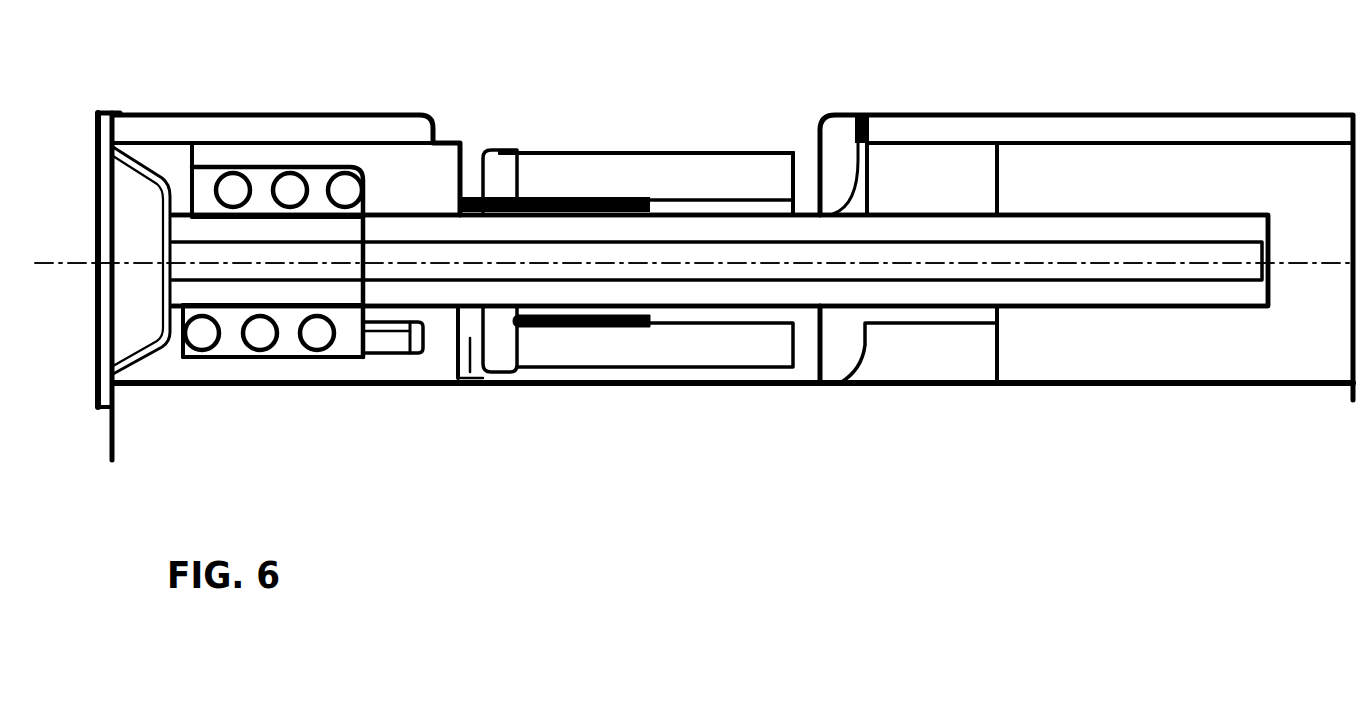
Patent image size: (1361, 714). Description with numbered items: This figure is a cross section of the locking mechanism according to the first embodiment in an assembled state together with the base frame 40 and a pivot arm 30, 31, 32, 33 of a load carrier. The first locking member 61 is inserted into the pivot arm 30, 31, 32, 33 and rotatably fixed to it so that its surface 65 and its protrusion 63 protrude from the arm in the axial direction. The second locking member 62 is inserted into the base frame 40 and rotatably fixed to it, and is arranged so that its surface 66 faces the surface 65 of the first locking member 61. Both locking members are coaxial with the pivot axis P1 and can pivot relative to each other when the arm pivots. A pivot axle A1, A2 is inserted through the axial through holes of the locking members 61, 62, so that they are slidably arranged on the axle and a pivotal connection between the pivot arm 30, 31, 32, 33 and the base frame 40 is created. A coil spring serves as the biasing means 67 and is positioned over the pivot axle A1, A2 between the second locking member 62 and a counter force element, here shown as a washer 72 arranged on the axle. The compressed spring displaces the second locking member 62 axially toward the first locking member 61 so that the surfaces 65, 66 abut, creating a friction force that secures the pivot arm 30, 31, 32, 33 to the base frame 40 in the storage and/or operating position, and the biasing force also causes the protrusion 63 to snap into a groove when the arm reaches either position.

The pivot arm 30 is at (645, 173).
The pivot arm 31 is at (646, 184).
The pivot arm 32 is at (646, 184).
The pivot arm 33 is at (646, 184).
The base frame 40 is at (1197, 130).
The first locking member 61 is at (498, 357).
The second locking member 62 is at (431, 196).
The protrusion 63 is at (474, 197).
The surface 65 is at (472, 340).
The surface 66 is at (476, 366).
The biasing means 67 is at (202, 338).
The washer 72 is at (98, 128).
The pivot axle A1 is at (1128, 297).
The pivot axle A2 is at (720, 260).
The pivot axis P1 is at (82, 263).